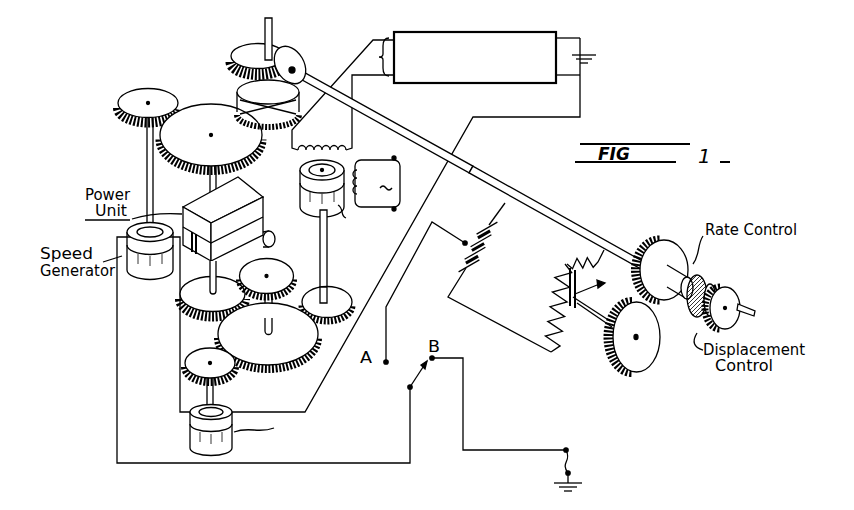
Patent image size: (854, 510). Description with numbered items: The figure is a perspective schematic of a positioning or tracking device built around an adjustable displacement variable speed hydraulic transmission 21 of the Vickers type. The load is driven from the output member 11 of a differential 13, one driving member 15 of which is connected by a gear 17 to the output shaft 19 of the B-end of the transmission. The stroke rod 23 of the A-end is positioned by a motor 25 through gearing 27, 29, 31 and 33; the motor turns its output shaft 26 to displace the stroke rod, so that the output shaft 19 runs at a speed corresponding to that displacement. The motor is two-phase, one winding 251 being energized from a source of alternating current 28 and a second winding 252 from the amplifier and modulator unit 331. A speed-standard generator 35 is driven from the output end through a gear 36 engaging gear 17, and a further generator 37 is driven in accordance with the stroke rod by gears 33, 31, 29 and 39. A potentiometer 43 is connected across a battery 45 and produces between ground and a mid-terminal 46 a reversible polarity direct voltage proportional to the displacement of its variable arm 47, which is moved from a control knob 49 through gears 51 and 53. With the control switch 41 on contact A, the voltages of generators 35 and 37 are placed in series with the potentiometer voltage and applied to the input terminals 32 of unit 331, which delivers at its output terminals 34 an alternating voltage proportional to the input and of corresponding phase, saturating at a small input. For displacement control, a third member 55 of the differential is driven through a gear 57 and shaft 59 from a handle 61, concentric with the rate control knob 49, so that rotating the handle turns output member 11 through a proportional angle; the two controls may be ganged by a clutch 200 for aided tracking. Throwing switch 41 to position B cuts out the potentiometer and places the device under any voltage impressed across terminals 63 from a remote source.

The output member 11 is at (275, 24).
The differential 13 is at (242, 89).
The driving member 15 is at (316, 88).
The gear 17 is at (256, 164).
The output shaft 19 is at (203, 192).
The adjustable displacement variable speed hydraulic transmission 21 is at (264, 199).
The stroke rod 23 is at (211, 281).
The motor 25 is at (296, 224).
The output shaft 26 is at (333, 250).
The gearing 27 is at (335, 294).
The source of alternating current 28 is at (400, 166).
The gearing 29 is at (300, 372).
The gearing 31 is at (278, 266).
The input terminals 32 is at (597, 52).
The gearing 33 is at (214, 322).
The output terminals 34 is at (342, 94).
The generator 35 is at (150, 275).
The gear 36 is at (120, 132).
The generator 37 is at (190, 440).
The gear 39 is at (234, 380).
The control switch 41 is at (405, 386).
The potentiometer 43 is at (540, 265).
The battery 45 is at (495, 242).
The mid-terminal 46 is at (466, 241).
The variable arm 47 is at (585, 295).
The control knob 49 is at (706, 283).
The gear 51 is at (666, 244).
The gear 53 is at (640, 370).
The third member 55 is at (242, 50).
The gear 57 is at (305, 56).
The shaft 59 is at (476, 170).
The handle 61 is at (740, 302).
The terminals 63 is at (569, 449).
The clutch 200 is at (713, 298).
The winding 251 is at (376, 183).
The winding 252 is at (310, 148).
The amplifier and modulator unit 331 is at (437, 33).